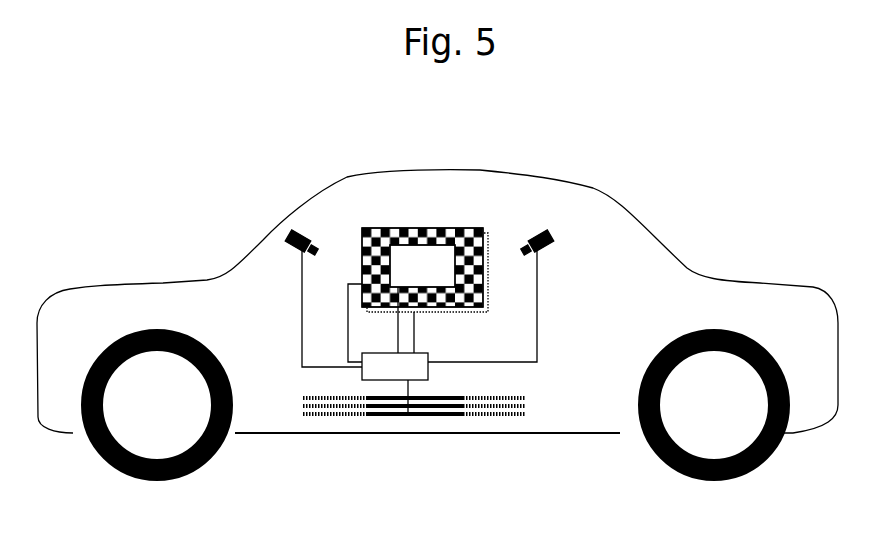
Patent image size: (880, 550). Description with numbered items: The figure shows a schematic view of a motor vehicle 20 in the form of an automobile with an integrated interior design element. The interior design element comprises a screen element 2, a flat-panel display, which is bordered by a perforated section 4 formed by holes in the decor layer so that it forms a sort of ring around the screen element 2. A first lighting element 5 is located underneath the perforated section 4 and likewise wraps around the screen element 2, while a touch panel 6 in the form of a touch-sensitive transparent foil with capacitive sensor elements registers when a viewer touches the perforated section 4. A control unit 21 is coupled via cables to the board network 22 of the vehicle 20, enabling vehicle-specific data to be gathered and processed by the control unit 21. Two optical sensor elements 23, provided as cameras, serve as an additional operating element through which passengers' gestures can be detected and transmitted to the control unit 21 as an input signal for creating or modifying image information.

The motor vehicle 20 is at (177, 262).
The perforated section 4 is at (378, 238).
The touch panel 6 is at (378, 238).
The screen element 2 is at (424, 255).
The optical sensor elements 23 is at (543, 237).
The first lighting element 5 is at (483, 310).
The control unit 21 is at (378, 378).
The board network 22 is at (447, 415).